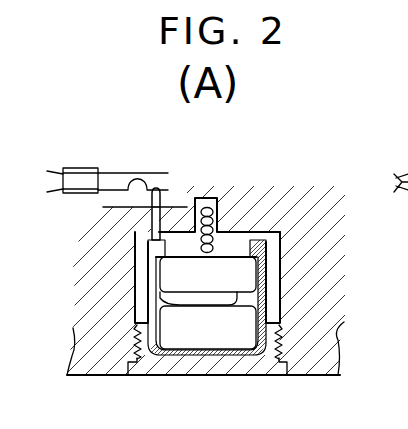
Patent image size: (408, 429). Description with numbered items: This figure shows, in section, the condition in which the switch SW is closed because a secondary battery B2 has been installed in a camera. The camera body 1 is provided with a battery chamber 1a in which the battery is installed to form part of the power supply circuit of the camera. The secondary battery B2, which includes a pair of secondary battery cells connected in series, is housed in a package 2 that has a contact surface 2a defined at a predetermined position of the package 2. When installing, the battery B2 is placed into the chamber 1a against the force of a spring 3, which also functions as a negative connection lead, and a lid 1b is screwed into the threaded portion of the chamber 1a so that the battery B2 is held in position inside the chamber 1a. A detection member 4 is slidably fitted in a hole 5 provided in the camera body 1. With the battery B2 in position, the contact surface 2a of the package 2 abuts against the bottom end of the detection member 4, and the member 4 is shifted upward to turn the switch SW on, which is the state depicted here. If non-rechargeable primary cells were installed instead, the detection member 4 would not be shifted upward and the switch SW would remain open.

The camera body 1 is at (321, 355).
The battery chamber 1a is at (274, 262).
The lid 1b is at (218, 364).
The package 2 is at (282, 245).
The contact surface 2a is at (133, 262).
The spring 3 is at (206, 209).
The detection member 4 is at (156, 213).
The hole 5 is at (166, 215).
The switch SW is at (72, 168).
The secondary battery B2 is at (188, 326).